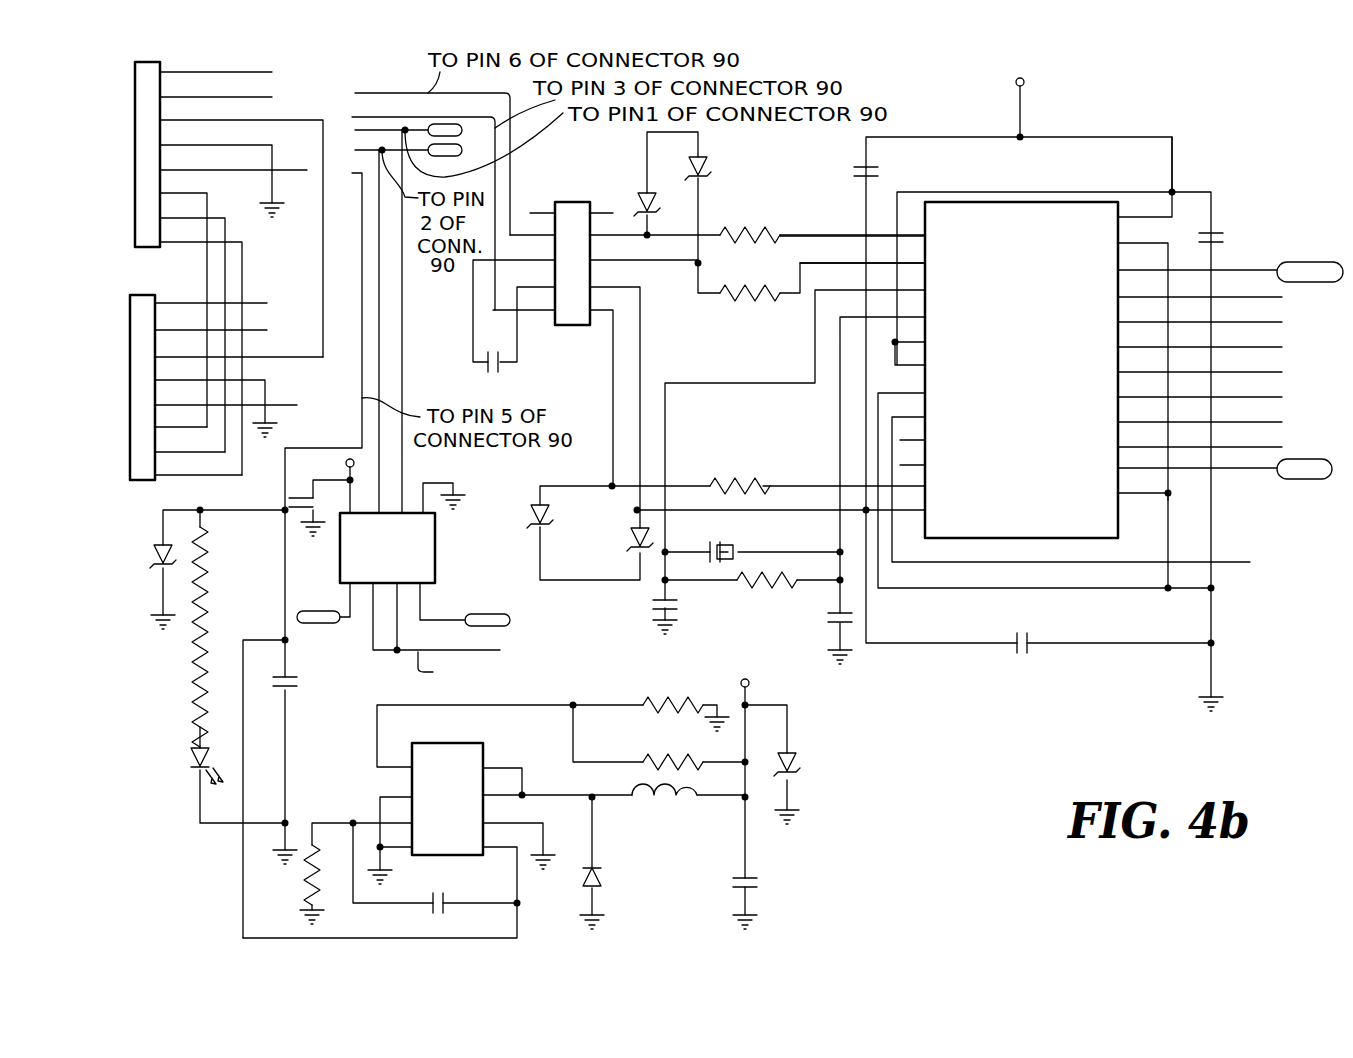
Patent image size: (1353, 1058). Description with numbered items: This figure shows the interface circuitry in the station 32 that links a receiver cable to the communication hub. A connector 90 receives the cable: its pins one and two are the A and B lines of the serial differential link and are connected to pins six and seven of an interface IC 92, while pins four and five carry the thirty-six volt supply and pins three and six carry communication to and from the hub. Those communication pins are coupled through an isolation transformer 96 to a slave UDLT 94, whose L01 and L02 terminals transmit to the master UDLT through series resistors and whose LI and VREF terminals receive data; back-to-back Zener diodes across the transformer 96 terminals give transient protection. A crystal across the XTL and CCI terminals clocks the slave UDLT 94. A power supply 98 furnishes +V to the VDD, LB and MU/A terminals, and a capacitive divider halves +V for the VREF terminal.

The connector 90 is at (313, 95).
The isolation transformer 96 is at (580, 198).
The slave UDLT 94 is at (1077, 170).
The station 32 is at (1210, 142).
The RS-485 interface IC 92 is at (460, 572).
The power supply 98 is at (623, 890).